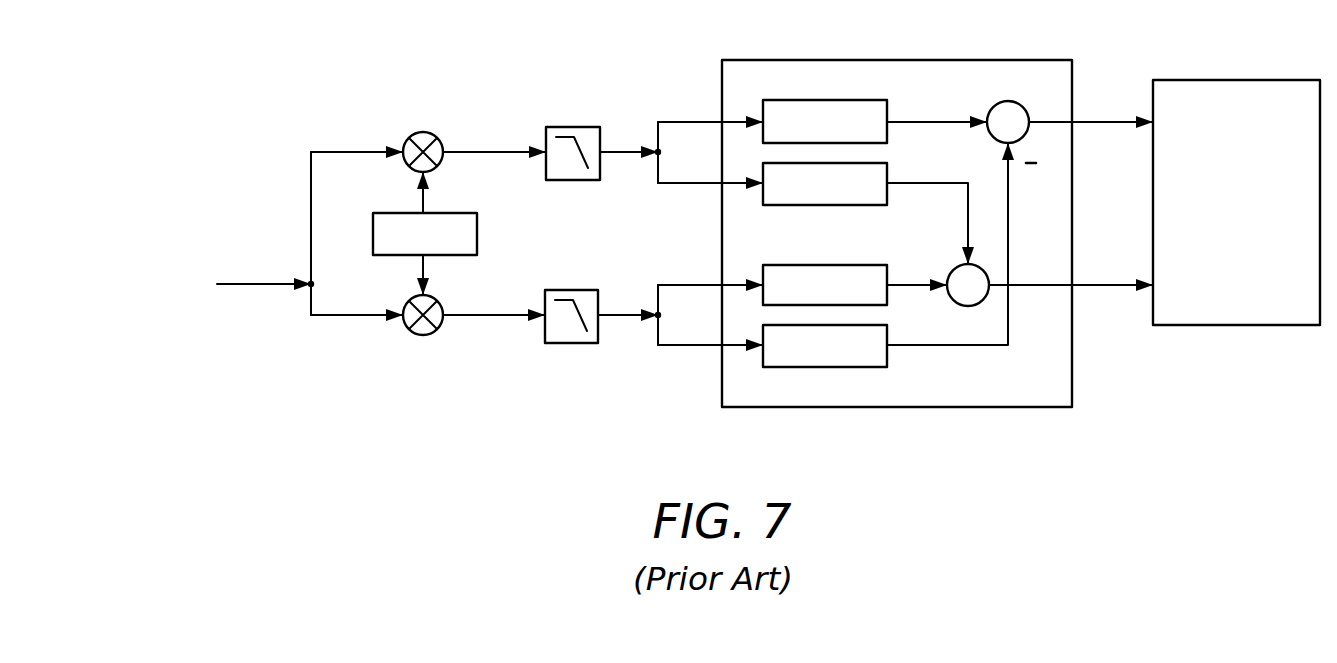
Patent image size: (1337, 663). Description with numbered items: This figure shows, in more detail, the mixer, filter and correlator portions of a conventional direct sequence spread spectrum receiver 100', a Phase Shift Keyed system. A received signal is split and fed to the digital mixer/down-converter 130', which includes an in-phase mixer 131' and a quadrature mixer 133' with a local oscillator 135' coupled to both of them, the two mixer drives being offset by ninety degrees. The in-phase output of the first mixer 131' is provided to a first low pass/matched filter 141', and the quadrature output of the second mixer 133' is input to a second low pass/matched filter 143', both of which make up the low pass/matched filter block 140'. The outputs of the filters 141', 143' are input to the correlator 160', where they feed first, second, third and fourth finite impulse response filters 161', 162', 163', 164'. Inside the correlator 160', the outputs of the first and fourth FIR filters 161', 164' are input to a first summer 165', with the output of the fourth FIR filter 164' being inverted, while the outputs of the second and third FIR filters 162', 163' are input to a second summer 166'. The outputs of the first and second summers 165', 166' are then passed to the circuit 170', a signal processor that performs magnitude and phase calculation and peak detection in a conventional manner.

The receiver 100' is at (262, 208).
The digital mixer/down-converter 130' is at (386, 275).
The in-phase mixer 131' is at (461, 165).
The quadrature mixer 133' is at (454, 333).
The local oscillator 135' is at (461, 233).
The low pass/matched filter 140' is at (551, 276).
The first low pass/matched filter 141' is at (550, 178).
The second low pass/matched filter 143' is at (550, 296).
The correlator 160' is at (915, 211).
The first finite impulse response (FIR) filter 161' is at (869, 104).
The second finite impulse response (FIR) filter 162' is at (865, 213).
The third finite impulse response (FIR) filter 163' is at (848, 269).
The fourth finite impulse response (FIR) filter 164' is at (885, 269).
The first summer 165' is at (988, 119).
The second summer 166' is at (946, 301).
The circuit for detecting magnitude and phase 170' is at (1157, 181).